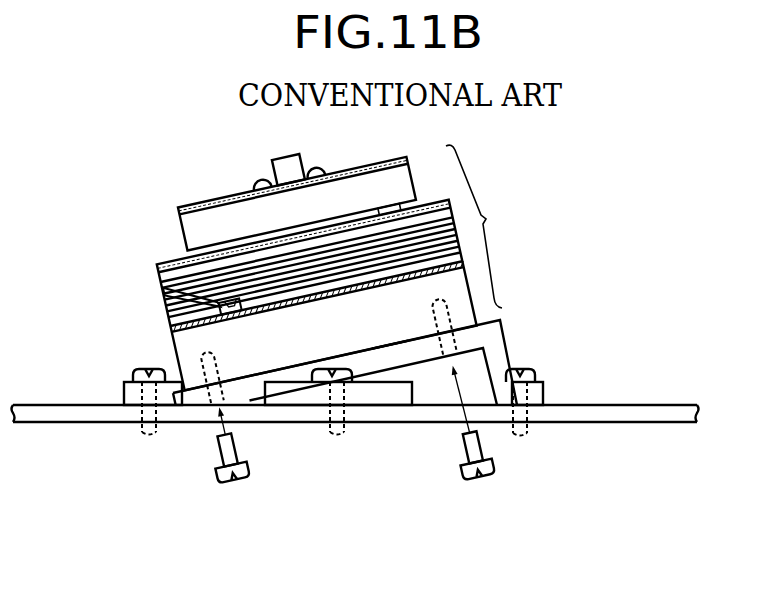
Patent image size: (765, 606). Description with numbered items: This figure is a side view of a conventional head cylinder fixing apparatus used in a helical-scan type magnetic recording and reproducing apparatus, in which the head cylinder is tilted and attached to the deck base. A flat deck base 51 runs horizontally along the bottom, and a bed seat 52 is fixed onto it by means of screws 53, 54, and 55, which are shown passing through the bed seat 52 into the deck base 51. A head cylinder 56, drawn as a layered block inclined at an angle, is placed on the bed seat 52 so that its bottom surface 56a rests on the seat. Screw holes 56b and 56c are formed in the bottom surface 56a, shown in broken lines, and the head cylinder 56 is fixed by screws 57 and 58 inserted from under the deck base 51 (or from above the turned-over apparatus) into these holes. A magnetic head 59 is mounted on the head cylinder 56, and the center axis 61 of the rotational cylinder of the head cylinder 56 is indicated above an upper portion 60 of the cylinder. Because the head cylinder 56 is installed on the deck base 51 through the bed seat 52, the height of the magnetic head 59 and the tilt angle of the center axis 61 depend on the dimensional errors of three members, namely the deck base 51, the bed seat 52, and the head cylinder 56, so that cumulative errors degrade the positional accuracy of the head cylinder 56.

The deck base 51 is at (614, 423).
The bed seat 52 is at (505, 332).
The screw 53 is at (133, 372).
The screw 54 is at (535, 372).
The screw 55 is at (316, 374).
The head cylinder 56 is at (338, 267).
The bottom surface 56a is at (389, 346).
The screw hole 56b is at (221, 357).
The screw hole 56c is at (433, 318).
The screw 57 is at (233, 481).
The screw 58 is at (488, 481).
The magnetic head 59 is at (168, 291).
The upper housing block 60 is at (173, 267).
The center axis 61 is at (273, 157).